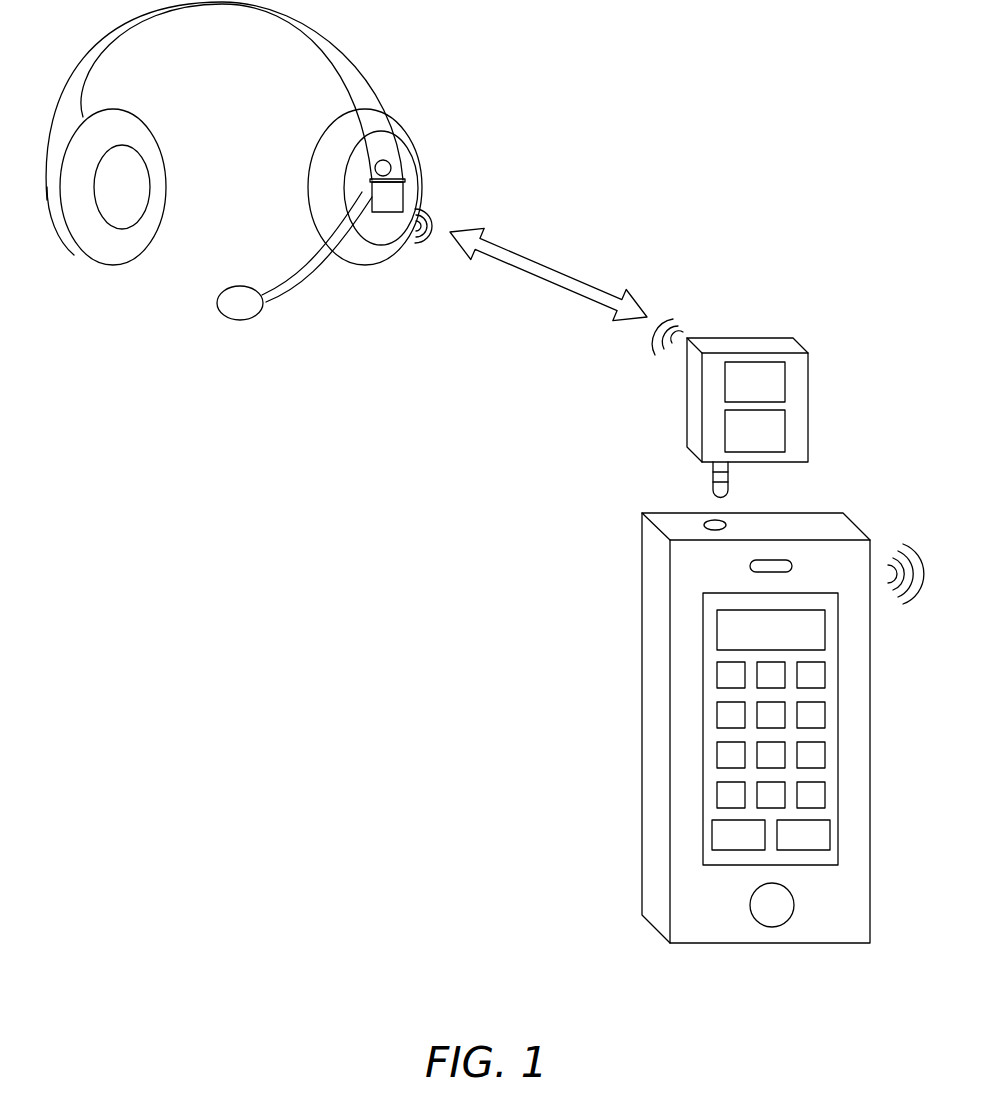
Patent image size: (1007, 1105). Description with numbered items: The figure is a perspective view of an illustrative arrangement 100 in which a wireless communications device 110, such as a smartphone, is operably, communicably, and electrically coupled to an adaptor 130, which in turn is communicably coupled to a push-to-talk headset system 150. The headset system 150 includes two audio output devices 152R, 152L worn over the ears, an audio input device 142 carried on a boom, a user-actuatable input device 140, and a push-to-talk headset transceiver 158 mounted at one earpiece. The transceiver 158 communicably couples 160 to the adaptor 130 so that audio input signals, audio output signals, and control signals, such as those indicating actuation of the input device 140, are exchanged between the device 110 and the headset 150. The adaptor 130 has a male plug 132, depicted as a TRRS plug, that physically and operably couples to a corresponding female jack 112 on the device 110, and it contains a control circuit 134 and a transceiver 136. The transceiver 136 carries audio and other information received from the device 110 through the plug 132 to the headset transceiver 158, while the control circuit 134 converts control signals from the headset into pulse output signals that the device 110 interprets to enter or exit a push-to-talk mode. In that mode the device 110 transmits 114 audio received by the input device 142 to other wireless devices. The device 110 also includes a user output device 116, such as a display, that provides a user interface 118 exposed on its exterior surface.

The communication system 100 is at (727, 63).
The wireless communications device 110 is at (855, 520).
The female jack 112 is at (708, 515).
The transmits 114 is at (905, 594).
The user output device 116 is at (838, 745).
The user interface 118 is at (708, 799).
The adaptor 130 is at (808, 403).
The male plug 132 is at (728, 478).
The control circuit 134 is at (772, 441).
The transceiver 136 is at (772, 392).
The user-actuatable input device 140 is at (391, 164).
The audio input device 142 is at (246, 320).
The push-to-talk headset system 150 is at (365, 62).
The audio output device 152R is at (167, 183).
The audio output device 152L is at (365, 265).
The push-to-talk headset transceiver 158 is at (403, 193).
The communicable coupling 160 is at (550, 268).